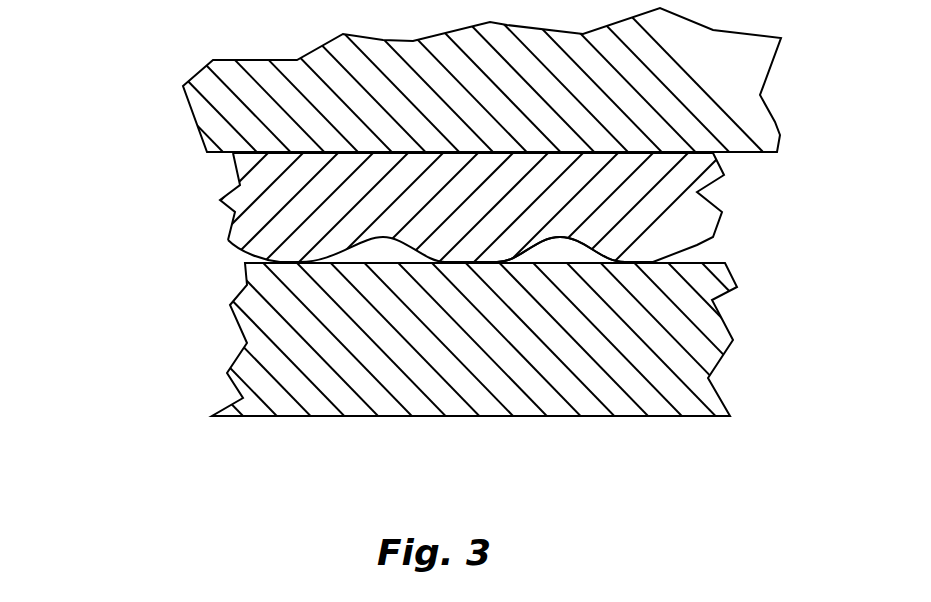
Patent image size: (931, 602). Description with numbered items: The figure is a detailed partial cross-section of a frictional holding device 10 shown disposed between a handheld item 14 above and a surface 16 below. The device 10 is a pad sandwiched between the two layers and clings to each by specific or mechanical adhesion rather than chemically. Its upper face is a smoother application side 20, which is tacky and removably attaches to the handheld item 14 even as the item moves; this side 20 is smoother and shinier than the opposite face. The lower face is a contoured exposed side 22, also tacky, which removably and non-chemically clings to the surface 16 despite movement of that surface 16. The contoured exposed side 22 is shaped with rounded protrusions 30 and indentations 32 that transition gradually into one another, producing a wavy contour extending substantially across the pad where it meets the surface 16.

The frictional holding device 10 is at (465, 301).
The handheld item 14 is at (752, 157).
The surface 16 is at (237, 387).
The smoother application side 20 is at (293, 152).
The contoured exposed side 22 is at (438, 301).
The protrusions 30 is at (647, 253).
The indentations 32 is at (563, 253).